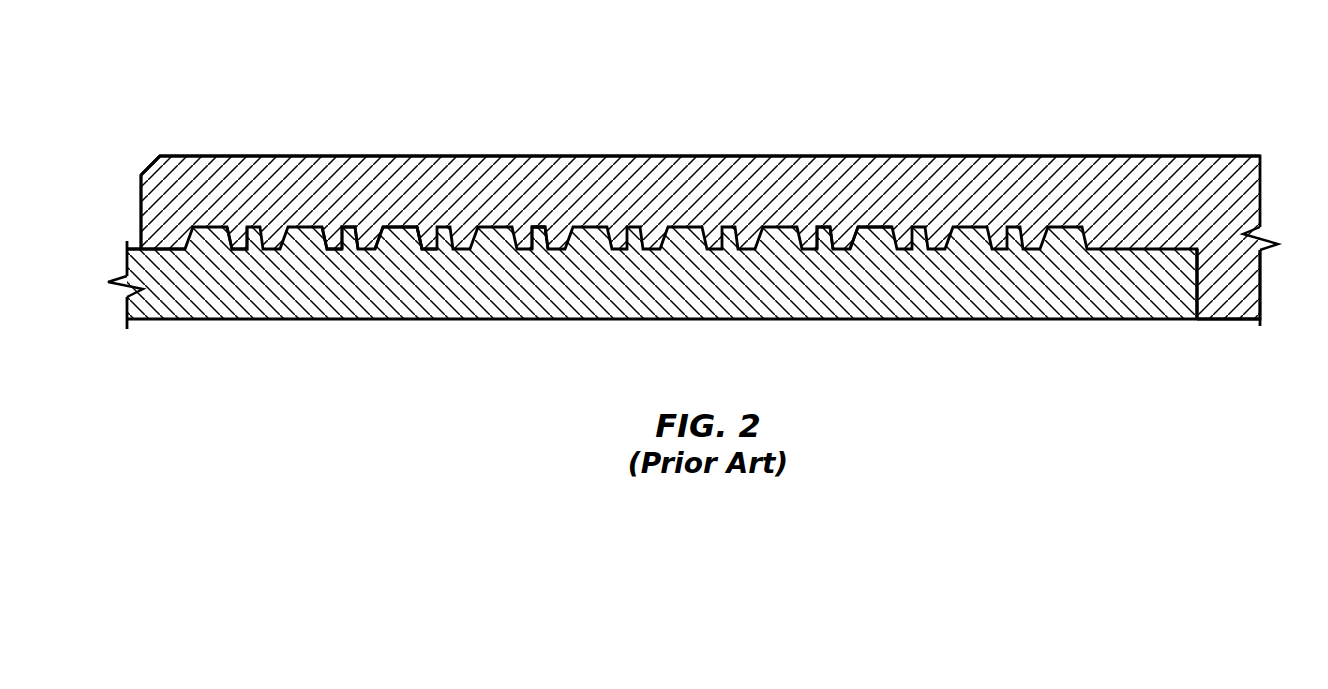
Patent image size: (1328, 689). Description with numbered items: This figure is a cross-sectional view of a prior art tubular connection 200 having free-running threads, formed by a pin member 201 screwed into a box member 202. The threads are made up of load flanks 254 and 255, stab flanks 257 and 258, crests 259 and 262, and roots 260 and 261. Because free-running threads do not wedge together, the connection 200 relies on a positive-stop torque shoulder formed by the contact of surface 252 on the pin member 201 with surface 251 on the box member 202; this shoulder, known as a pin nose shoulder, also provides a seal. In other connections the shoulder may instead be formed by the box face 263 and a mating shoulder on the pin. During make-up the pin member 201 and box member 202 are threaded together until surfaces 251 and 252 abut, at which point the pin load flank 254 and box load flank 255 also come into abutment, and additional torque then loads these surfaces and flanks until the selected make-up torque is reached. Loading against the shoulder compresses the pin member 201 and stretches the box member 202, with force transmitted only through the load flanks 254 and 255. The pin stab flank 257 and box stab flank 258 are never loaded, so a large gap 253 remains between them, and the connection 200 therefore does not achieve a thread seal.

The prior art connection 200 is at (1040, 105).
The pin member 201 is at (240, 296).
The box member 202 is at (1197, 213).
The surface 251 is at (1197, 285).
The surface 252 is at (1197, 285).
The gap 253 is at (237, 232).
The pin load flank 254 is at (830, 250).
The box load flank 255 is at (851, 240).
The pin stab flank 257 is at (350, 227).
The box stab flank 258 is at (334, 250).
The crest 259 is at (396, 240).
The root 260 is at (427, 250).
The root 261 is at (545, 246).
The crest 262 is at (546, 250).
The box face 263 is at (141, 216).